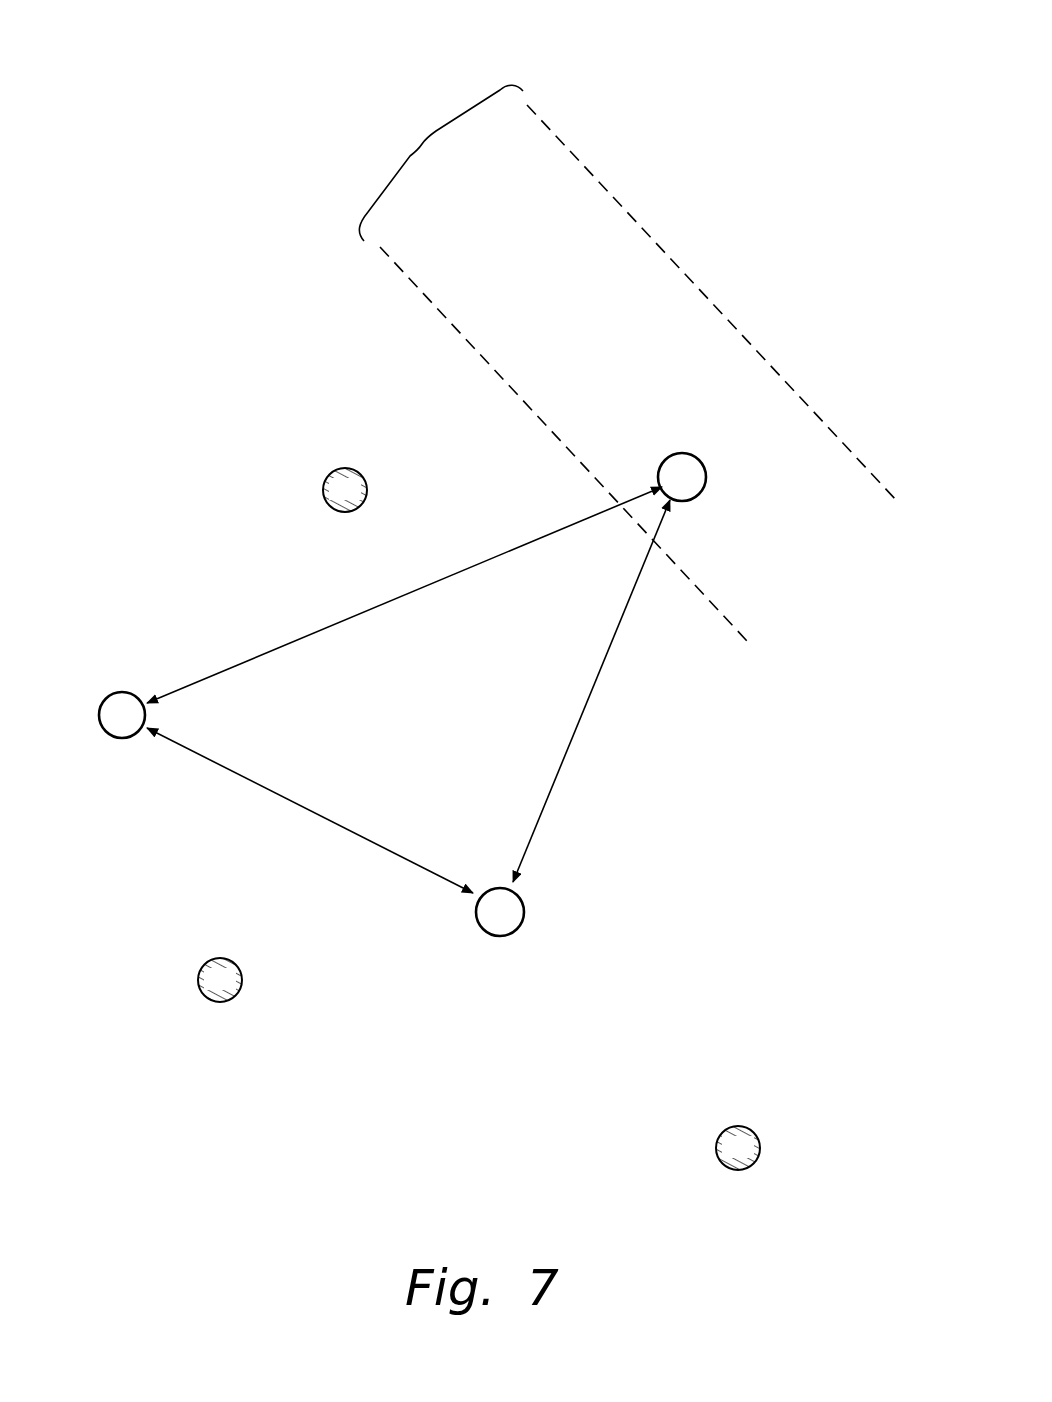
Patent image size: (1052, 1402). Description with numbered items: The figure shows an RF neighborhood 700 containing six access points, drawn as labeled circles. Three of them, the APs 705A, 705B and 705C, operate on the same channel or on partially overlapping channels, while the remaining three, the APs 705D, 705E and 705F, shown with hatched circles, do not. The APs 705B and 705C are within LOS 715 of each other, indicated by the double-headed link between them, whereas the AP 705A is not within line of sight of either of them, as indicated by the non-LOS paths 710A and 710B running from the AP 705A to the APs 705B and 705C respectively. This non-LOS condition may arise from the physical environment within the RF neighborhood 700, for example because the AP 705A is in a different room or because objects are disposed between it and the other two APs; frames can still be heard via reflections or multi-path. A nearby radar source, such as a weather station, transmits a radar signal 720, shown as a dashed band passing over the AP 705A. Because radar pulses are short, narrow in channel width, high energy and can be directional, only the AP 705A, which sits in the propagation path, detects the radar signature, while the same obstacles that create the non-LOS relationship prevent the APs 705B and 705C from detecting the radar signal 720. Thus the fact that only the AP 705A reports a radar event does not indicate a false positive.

The RF neighborhood 700 is at (112, 70).
The access point 705A is at (680, 452).
The access point 705B is at (110, 692).
The access point 705C is at (517, 929).
The access point 705D is at (330, 473).
The access point 705E is at (212, 1003).
The access point 705F is at (723, 1133).
The non-LOS path 710A is at (320, 627).
The non-LOS path 710B is at (573, 741).
The LOS 715 is at (270, 792).
The radar signal 720 is at (419, 141).